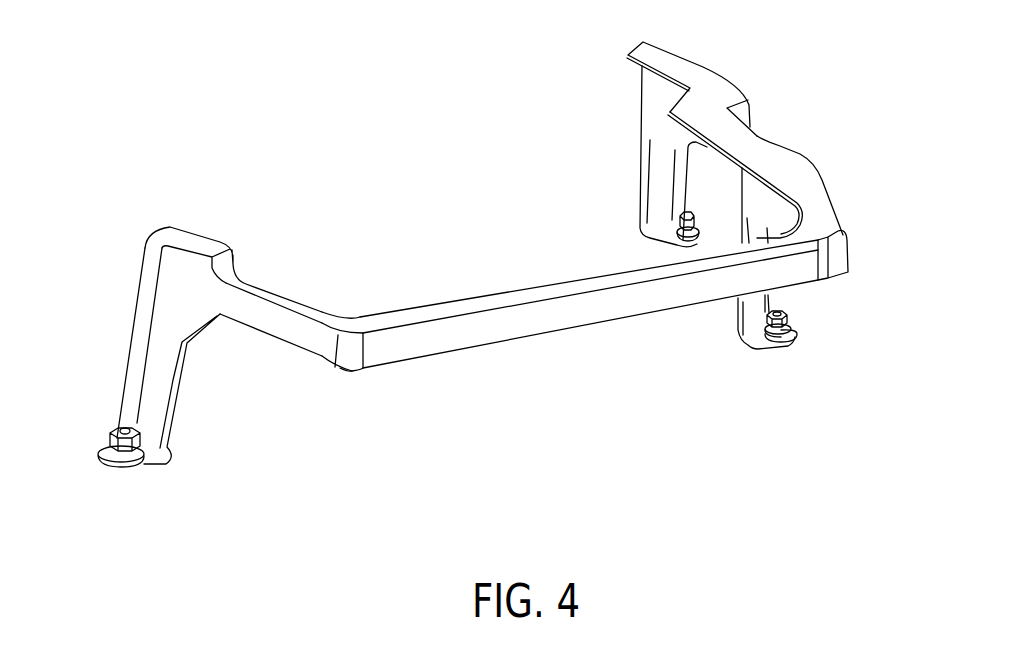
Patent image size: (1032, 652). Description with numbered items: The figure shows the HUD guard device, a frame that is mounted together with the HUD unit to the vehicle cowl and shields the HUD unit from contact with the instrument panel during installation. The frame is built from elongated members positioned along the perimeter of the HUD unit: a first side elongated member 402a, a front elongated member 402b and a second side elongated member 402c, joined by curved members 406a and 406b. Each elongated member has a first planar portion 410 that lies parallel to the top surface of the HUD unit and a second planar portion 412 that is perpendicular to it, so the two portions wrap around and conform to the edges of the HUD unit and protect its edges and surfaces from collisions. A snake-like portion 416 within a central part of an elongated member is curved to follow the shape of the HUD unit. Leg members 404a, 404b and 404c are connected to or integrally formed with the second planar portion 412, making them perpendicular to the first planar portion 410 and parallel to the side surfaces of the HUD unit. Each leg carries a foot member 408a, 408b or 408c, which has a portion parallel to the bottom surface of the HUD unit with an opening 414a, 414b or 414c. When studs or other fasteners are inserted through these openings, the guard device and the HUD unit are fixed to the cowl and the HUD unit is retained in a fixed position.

The first side elongated member 402a is at (757, 133).
The front elongated member 402b is at (613, 327).
The second side elongated member 402c is at (255, 288).
The leg member 404a is at (640, 162).
The leg member 404b is at (795, 207).
The leg member 404c is at (160, 403).
The curved member 406a is at (842, 256).
The curved member 406b is at (347, 372).
The foot member 408a is at (700, 232).
The foot member 408b is at (795, 340).
The foot member 408c is at (127, 465).
The first planar portion 410 is at (300, 303).
The second planar portion 412 is at (295, 335).
The opening 414a is at (697, 213).
The opening 414b is at (772, 345).
The opening 414c is at (100, 443).
The snake-like portion 416 is at (719, 86).